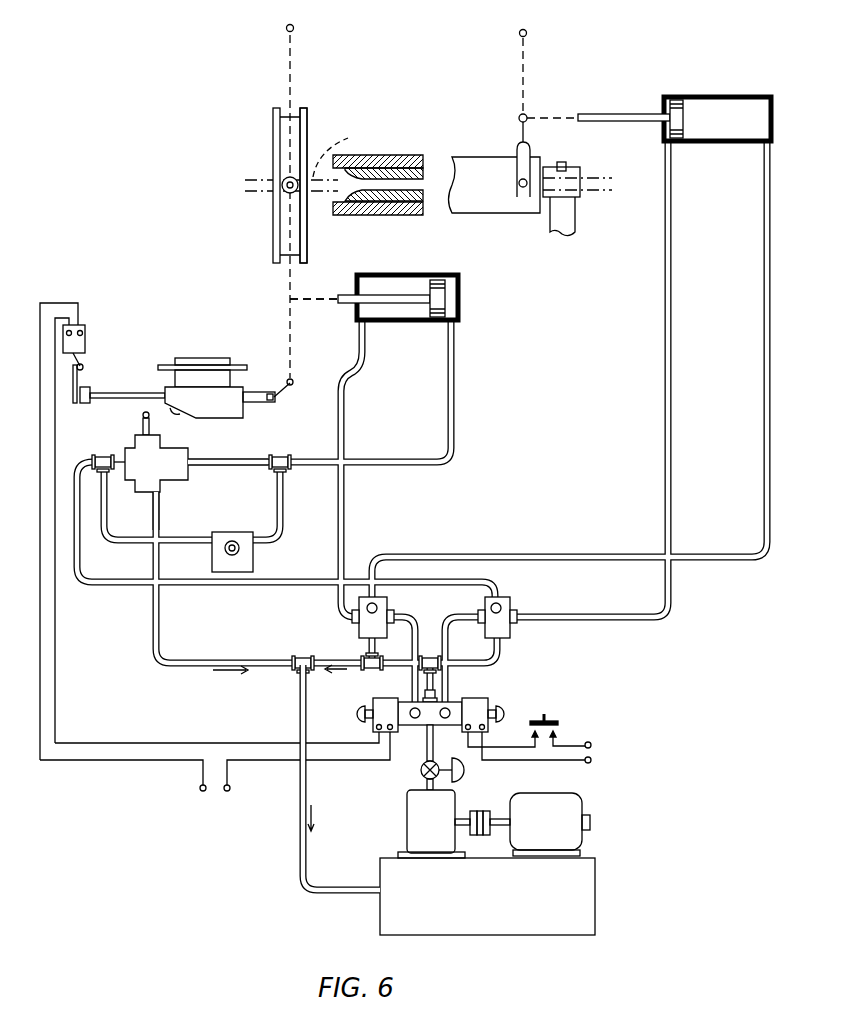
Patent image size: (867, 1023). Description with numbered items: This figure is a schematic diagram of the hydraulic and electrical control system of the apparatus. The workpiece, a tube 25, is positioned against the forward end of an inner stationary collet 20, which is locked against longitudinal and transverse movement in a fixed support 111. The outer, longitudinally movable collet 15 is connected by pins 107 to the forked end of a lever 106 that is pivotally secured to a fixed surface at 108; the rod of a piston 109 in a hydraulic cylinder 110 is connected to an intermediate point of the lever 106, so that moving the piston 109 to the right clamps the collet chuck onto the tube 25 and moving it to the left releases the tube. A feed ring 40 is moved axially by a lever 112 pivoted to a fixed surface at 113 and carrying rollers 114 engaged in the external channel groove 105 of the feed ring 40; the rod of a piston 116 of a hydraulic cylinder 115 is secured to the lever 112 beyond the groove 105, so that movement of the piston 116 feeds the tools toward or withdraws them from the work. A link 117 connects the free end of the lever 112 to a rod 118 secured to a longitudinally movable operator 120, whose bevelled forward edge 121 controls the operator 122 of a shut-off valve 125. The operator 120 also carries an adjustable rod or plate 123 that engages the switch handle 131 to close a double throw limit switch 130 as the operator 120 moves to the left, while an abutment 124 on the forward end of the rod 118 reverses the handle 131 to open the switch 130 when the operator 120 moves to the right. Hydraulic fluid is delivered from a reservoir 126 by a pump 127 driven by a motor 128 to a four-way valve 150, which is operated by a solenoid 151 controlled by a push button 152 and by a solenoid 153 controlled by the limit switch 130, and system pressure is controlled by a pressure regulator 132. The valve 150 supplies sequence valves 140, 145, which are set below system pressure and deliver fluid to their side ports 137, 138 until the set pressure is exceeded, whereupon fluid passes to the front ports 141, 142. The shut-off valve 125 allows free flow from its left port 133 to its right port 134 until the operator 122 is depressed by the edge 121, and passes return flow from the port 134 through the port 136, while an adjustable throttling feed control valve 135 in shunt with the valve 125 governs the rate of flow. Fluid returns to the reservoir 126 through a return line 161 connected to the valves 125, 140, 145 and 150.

The outer longitudinally movable collet 15 is at (400, 158).
The inner stationary collet 20 is at (428, 167).
The tube 25 is at (343, 150).
The feed ring 40 is at (308, 132).
The external channel groove 105 is at (293, 112).
The lever 106 is at (527, 140).
The pins 107 is at (521, 192).
The pivot 108 is at (527, 35).
The piston 109 is at (682, 95).
The hydraulic cylinder 110 is at (730, 96).
The fixed support 111 is at (570, 228).
The lever 112 is at (297, 280).
The pivot 113 is at (295, 26).
The rollers 114 is at (283, 182).
The hydraulic cylinder 115 is at (398, 275).
The piston 116 is at (438, 312).
The link 117 is at (284, 383).
The rod 118 is at (270, 404).
The longitudinally movable operator 120 is at (220, 418).
The bevelled forward edge 121 is at (182, 422).
The valve operator 122 is at (142, 416).
The adjustable rod or plate 123 is at (163, 366).
The abutment 124 is at (78, 382).
The shut-off valve 125 is at (178, 484).
The reservoir 126 is at (575, 906).
The pump 127 is at (408, 832).
The motor 128 is at (555, 818).
The double throw limit switch 130 is at (86, 325).
The switch handle 131 is at (84, 362).
The pressure regulator 132 is at (464, 772).
The left port 133 is at (120, 460).
The right port 134 is at (190, 462).
The adjustable feed control valve 135 is at (252, 562).
The return port 136 is at (152, 496).
The side port 137 is at (518, 614).
The side port 138 is at (357, 620).
The sequence valve 140 is at (510, 632).
The front port 141 is at (503, 604).
The front port 142 is at (378, 610).
The sequence valve 145 is at (352, 612).
The 4-way valve 150 is at (418, 726).
The solenoid 151 is at (485, 698).
The push button 152 is at (562, 714).
The solenoid 153 is at (385, 698).
The return line 161 is at (300, 872).